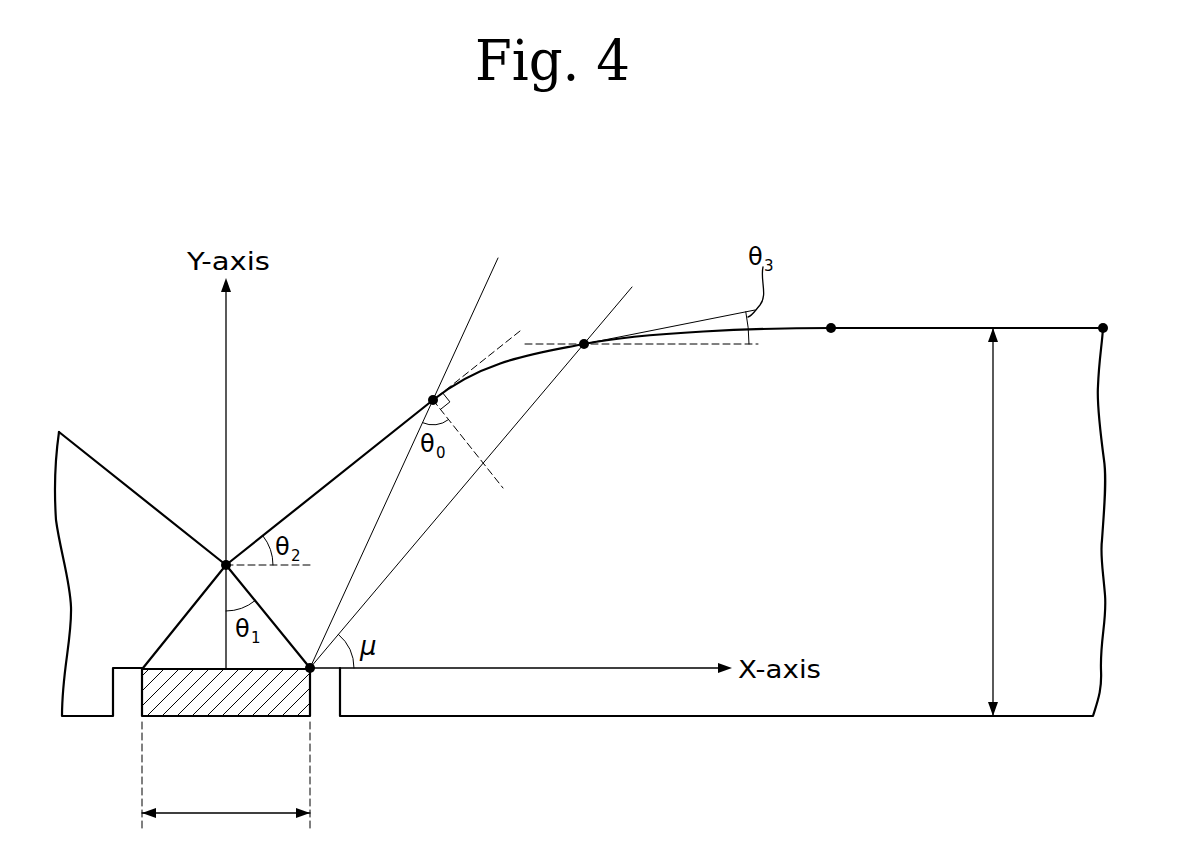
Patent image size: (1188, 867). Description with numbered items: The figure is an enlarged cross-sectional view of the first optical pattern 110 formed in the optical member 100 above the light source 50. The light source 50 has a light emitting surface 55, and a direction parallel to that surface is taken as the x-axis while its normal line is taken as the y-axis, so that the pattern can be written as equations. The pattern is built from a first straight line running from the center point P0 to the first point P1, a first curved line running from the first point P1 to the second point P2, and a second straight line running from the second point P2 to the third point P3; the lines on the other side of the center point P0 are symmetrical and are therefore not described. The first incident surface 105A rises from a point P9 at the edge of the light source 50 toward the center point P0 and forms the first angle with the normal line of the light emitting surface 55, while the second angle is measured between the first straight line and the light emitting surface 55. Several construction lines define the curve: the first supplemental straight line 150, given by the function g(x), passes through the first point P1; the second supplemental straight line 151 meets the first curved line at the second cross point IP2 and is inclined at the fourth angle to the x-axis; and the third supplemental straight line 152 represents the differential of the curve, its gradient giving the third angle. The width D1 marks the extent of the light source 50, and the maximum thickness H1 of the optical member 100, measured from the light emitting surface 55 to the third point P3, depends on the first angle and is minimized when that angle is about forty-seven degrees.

The light source 50 is at (201, 700).
The light emitting surface 55 is at (257, 660).
The optical member 100 is at (1090, 541).
The first incident surface 105A is at (291, 645).
The first optical pattern 110 is at (380, 400).
The first supplemental straight line 150 is at (486, 285).
The second supplemental straight line 151 is at (618, 300).
The third supplemental straight line 152 is at (697, 320).
The center point P0 is at (224, 562).
The first point P1 is at (432, 397).
The second cross point IP2 is at (583, 342).
The second point P2 is at (832, 325).
The third point P3 is at (1103, 325).
The point P9 is at (312, 672).
The maximum thickness H1 is at (1008, 522).
The width D1 is at (226, 784).